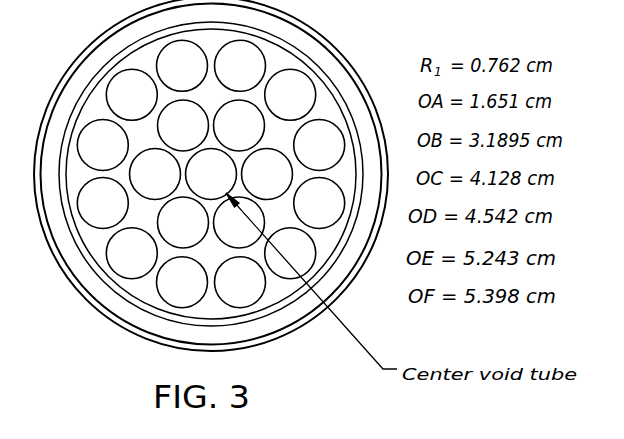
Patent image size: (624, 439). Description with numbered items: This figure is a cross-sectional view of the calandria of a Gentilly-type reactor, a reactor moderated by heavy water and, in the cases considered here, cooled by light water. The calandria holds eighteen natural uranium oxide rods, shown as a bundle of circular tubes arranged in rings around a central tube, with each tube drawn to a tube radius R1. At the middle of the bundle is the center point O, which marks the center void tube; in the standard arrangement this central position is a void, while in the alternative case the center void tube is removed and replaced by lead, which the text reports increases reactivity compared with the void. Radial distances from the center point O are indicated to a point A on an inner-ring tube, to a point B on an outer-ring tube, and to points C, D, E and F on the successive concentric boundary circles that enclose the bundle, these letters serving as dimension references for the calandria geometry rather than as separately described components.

The inner ring tube at distance OA A is at (210, 173).
The outer ring tube at distance OB B is at (210, 173).
The inner shell circle of radius OC C is at (211, 175).
The shell circle of radius OD D is at (211, 185).
The outer shell circle of radius OE E is at (211, 177).
The outermost shell circle of radius OF F is at (211, 186).
The center void tube O is at (207, 352).
The tube radius R1 is at (265, 126).